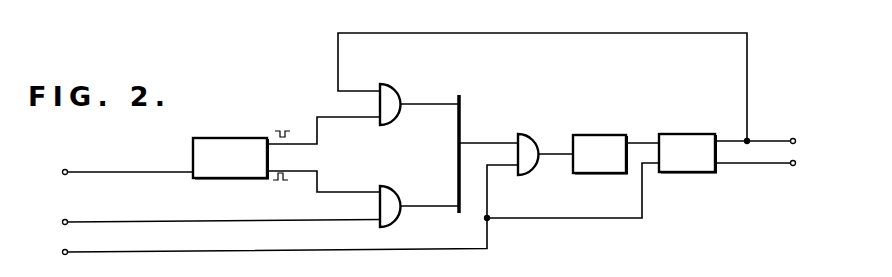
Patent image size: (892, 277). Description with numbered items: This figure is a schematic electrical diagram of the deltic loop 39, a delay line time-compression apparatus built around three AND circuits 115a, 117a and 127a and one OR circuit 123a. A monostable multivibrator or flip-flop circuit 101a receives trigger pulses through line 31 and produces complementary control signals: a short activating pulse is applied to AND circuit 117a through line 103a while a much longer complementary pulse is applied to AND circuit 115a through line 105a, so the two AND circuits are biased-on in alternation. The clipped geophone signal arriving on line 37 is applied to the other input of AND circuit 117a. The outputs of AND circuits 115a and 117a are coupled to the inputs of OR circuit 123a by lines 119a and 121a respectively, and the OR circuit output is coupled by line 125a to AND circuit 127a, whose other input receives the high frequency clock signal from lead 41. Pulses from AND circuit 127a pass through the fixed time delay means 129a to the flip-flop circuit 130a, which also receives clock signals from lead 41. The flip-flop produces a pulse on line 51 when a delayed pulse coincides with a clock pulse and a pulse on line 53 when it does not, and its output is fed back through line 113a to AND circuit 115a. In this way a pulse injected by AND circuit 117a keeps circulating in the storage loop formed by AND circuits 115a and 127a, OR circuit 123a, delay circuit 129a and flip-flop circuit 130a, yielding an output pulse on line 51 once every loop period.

The line 31 is at (115, 172).
The line 37 is at (117, 222).
The lead 41 is at (114, 255).
The deltic loop 39 is at (640, 68).
The line 51 is at (773, 139).
The line 53 is at (778, 164).
The flip-flop circuit 101a is at (224, 137).
The line 103a is at (331, 200).
The line 105a is at (322, 111).
The line 113a is at (604, 32).
The AND circuit 115a is at (383, 88).
The AND circuit 117a is at (389, 186).
The line 119a is at (430, 117).
The line 121a is at (427, 207).
The OR circuit 123a is at (462, 106).
The line 125a is at (488, 133).
The AND circuit 127a is at (528, 133).
The time delay means 129a is at (597, 133).
The flip-flop circuit 130a is at (684, 133).